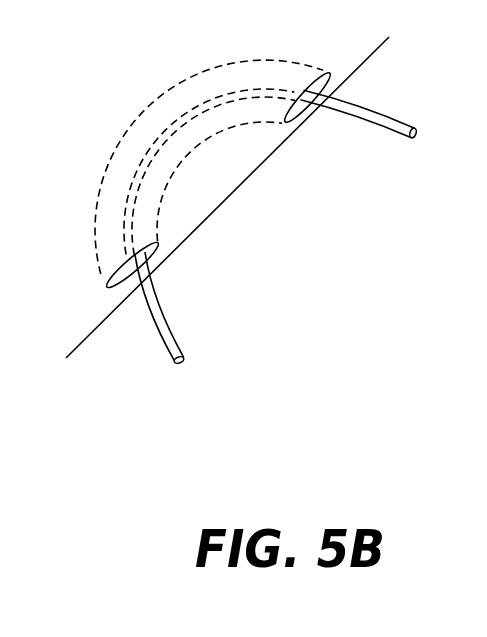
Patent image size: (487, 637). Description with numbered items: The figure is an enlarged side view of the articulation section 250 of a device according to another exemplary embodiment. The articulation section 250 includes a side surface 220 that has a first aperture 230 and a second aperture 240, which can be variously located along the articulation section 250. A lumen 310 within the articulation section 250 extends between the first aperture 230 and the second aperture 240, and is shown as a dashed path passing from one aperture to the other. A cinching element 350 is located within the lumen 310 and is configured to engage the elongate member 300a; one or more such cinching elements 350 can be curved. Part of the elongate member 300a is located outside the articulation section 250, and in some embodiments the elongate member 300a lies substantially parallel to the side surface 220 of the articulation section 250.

The side surface 220 is at (90, 352).
The first aperture 230 is at (163, 278).
The second aperture 240 is at (320, 128).
The articulation section 250 is at (383, 63).
The elongate member 300a is at (180, 348).
The lumen 310 is at (137, 97).
The cinching element 350 is at (225, 160).